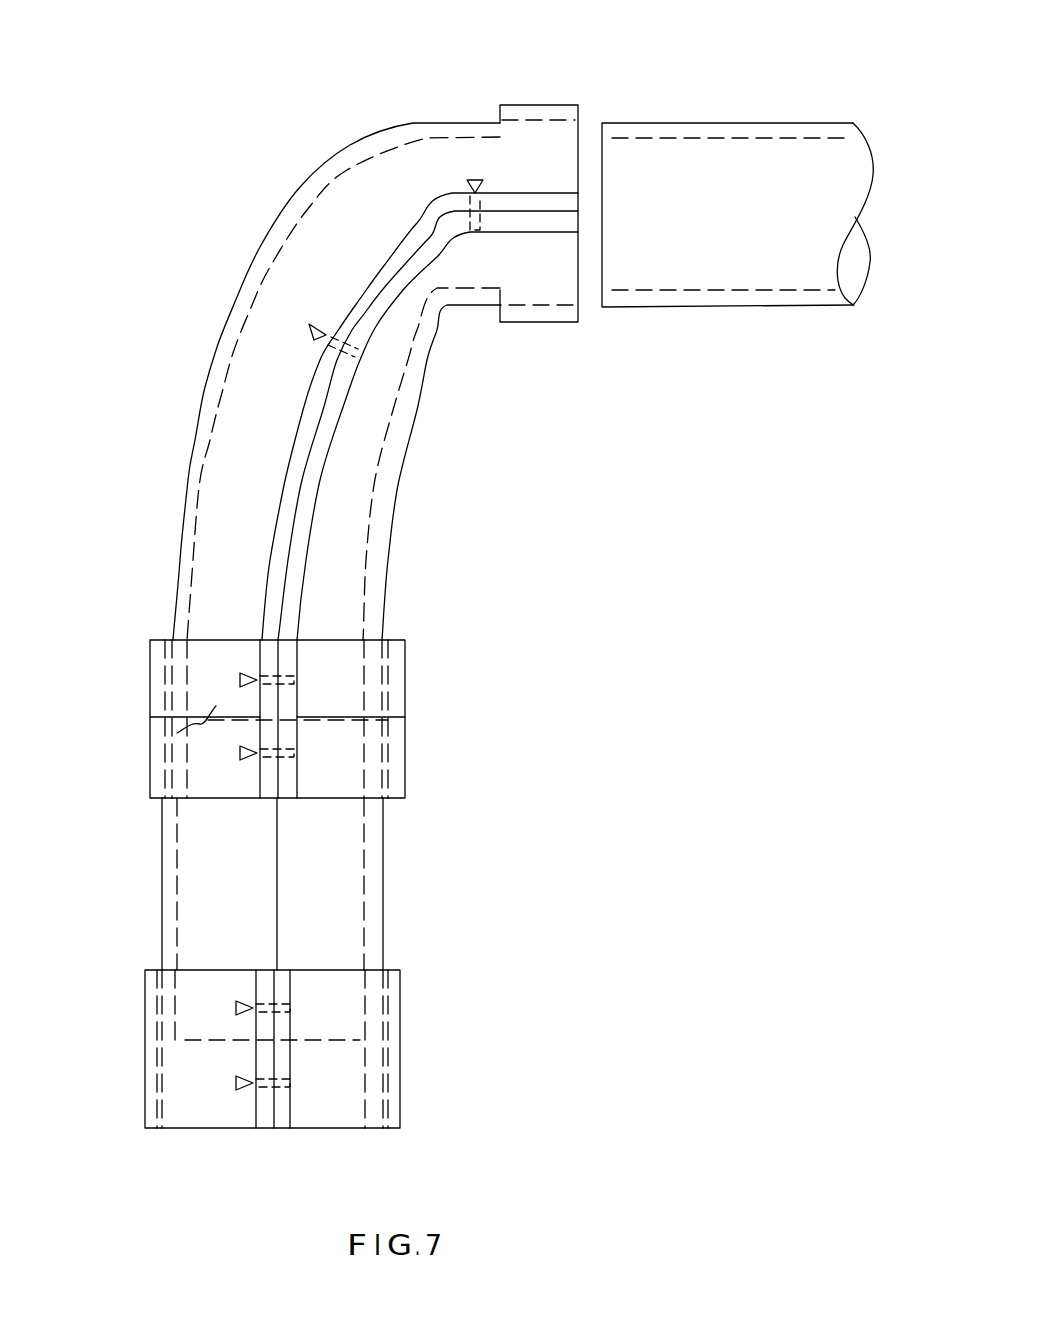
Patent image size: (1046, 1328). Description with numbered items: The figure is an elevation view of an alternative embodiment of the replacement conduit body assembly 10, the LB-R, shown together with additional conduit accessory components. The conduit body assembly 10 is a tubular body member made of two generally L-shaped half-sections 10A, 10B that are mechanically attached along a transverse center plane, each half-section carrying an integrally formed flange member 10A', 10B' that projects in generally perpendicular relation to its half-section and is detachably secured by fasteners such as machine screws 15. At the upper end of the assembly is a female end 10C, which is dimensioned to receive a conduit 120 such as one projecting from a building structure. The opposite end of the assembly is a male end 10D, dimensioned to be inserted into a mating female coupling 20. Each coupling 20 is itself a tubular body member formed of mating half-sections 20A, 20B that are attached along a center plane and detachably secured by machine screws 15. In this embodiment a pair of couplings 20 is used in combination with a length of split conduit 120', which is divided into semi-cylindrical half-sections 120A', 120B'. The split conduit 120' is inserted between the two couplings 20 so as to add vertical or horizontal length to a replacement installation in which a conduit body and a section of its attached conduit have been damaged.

The conduit body assembly 10 is at (212, 210).
The half-section 10A is at (299, 388).
The flange member 10A' is at (336, 416).
The half-section 10B is at (434, 464).
The flange member 10B' is at (437, 436).
The female end 10C is at (567, 140).
The male end 10D is at (177, 733).
The machine screws 15 is at (475, 180).
The coupling 20 is at (465, 707).
The half-section 20A is at (148, 782).
The half-section 20B is at (405, 763).
The conduit 120 is at (737, 260).
The split conduit 120' is at (438, 884).
The semi-cylindrical half-section 120A' is at (105, 884).
The semi-cylindrical half-section 120B' is at (439, 884).